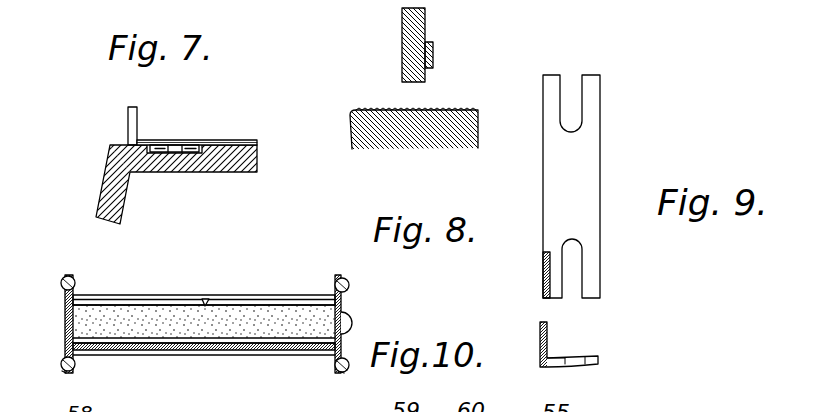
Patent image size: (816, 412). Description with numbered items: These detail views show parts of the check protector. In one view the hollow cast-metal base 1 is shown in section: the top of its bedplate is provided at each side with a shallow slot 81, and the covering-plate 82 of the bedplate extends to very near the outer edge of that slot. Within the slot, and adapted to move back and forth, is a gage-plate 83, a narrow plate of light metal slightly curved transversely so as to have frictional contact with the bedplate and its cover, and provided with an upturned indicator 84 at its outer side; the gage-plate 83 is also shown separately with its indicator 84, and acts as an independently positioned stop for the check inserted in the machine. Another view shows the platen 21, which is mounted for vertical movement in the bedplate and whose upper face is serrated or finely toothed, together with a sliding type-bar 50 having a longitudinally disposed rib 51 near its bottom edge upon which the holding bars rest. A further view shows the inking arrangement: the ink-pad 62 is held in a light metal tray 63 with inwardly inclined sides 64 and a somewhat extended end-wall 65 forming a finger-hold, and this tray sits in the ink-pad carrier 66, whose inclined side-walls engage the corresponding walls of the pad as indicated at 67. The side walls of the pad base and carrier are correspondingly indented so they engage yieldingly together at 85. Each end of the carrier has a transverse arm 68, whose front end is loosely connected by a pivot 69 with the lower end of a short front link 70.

In FIG. 7, the hollow cast-metal base 1 is at (125, 193).
In FIG. 8, the platen 21 is at (362, 140).
In FIG. 8, the sliding type-bar 50 is at (408, 30).
In FIG. 8, the longitudinally disposed rib 51 is at (433, 52).
In FIG. 10, the filling layer 62 is at (135, 318).
In FIG. 10, the light metal tray 63 is at (245, 305).
In FIG. 10, the inwardly inclined tray sides 64 is at (110, 287).
In FIG. 10, the extended end-wall 65 is at (351, 322).
In FIG. 10, the ink-pad carrier 66 is at (290, 300).
In FIG. 10, the inclined side-walls of carrier 67 is at (140, 351).
In FIG. 10, the transverse arm 68 is at (65, 327).
In FIG. 10, the pivot 69 is at (62, 366).
In FIG. 10, the short front link 70 is at (70, 372).
In FIG. 7, the shallow slot 81 is at (207, 172).
In FIG. 7, the covering-plate 82 is at (240, 129).
In FIG. 7, the gage-plate 83 is at (173, 145).
In FIG. 9, the gage-plate 83 is at (601, 163).
In FIG. 7, the upturned indicator 84 is at (128, 121).
In FIG. 9, the upturned indicator 84 is at (543, 277).
In FIG. 10, the indentation 85 is at (206, 299).